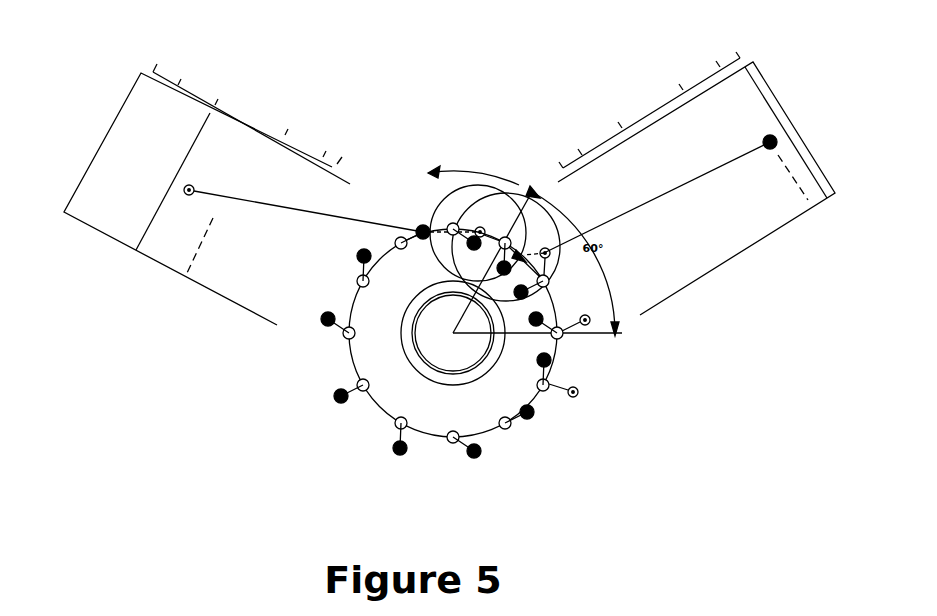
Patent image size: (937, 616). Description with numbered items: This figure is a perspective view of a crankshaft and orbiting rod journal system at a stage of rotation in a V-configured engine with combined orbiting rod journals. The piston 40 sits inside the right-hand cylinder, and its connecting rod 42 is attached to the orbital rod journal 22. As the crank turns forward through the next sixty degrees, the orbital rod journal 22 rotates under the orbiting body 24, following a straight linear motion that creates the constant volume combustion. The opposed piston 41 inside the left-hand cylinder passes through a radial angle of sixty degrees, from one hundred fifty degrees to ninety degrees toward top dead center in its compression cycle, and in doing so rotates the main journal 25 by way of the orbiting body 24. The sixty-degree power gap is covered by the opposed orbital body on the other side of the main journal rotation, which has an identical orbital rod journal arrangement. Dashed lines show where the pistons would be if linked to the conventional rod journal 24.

The piston 40 is at (772, 92).
The piston 41 is at (183, 160).
The connecting rod 42 is at (662, 190).
The orbital rod journal 22 is at (340, 397).
The orbiting body 24 is at (397, 422).
The main journal 25 is at (442, 332).